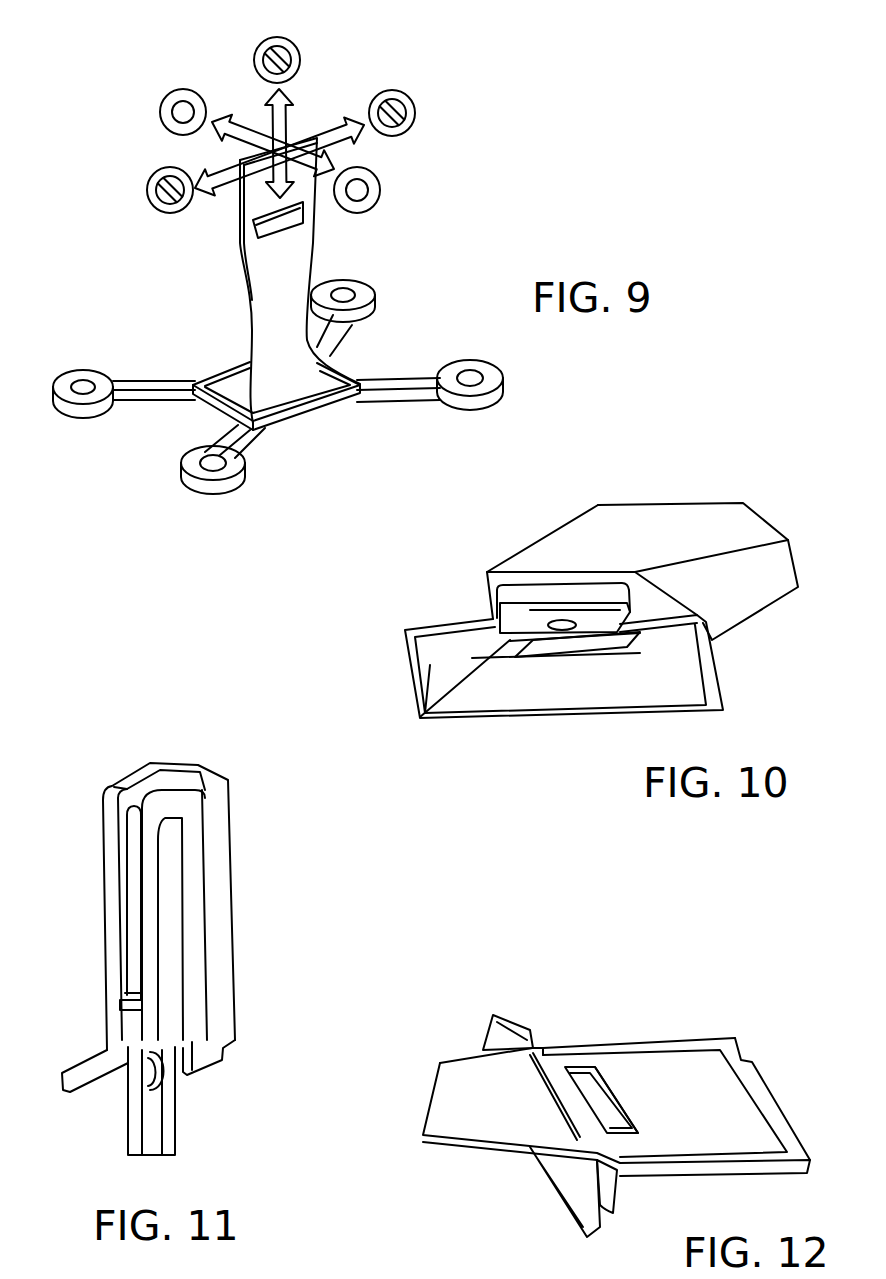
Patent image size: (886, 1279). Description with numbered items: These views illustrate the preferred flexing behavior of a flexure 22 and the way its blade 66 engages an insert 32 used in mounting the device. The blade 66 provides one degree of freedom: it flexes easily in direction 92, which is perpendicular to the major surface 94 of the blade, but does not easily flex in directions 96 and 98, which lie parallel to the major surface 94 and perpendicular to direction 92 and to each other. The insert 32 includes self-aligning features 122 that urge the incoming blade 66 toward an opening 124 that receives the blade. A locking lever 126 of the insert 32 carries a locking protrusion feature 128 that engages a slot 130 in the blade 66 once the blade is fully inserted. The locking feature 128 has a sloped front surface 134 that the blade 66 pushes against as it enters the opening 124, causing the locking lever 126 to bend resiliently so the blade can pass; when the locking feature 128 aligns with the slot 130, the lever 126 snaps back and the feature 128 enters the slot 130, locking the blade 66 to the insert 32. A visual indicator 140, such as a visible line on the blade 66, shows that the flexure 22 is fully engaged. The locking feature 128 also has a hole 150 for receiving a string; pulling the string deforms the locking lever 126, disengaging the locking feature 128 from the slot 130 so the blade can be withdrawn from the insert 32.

In FIG. 9, the flexure 22 is at (165, 289).
In FIG. 12, the flexure 22 is at (580, 1103).
In FIG. 10, the insert 32 is at (660, 502).
In FIG. 11, the insert 32 is at (217, 782).
In FIG. 12, the insert 32 is at (738, 1043).
In FIG. 9, the blade 66 is at (297, 243).
In FIG. 12, the blade 66 is at (738, 1102).
In FIG. 9, the direction 92 is at (237, 117).
In FIG. 9, the major surface 94 is at (250, 197).
In FIG. 9, the direction 96 is at (287, 117).
In FIG. 9, the direction 98 is at (207, 168).
In FIG. 10, the self-aligning features 122 is at (432, 663).
In FIG. 12, the self-aligning features 122 is at (568, 1177).
In FIG. 10, the opening 124 is at (547, 668).
In FIG. 11, the locking lever 126 is at (143, 902).
In FIG. 12, the locking lever 126 is at (612, 1132).
In FIG. 11, the locking protrusion feature 128 is at (137, 1013).
In FIG. 12, the locking protrusion feature 128 is at (577, 1067).
In FIG. 12, the slot 130 is at (625, 1086).
In FIG. 11, the sloped front surface 134 is at (123, 1038).
In FIG. 12, the visual indicator 140 is at (552, 1110).
In FIG. 10, the hole 150 is at (568, 622).